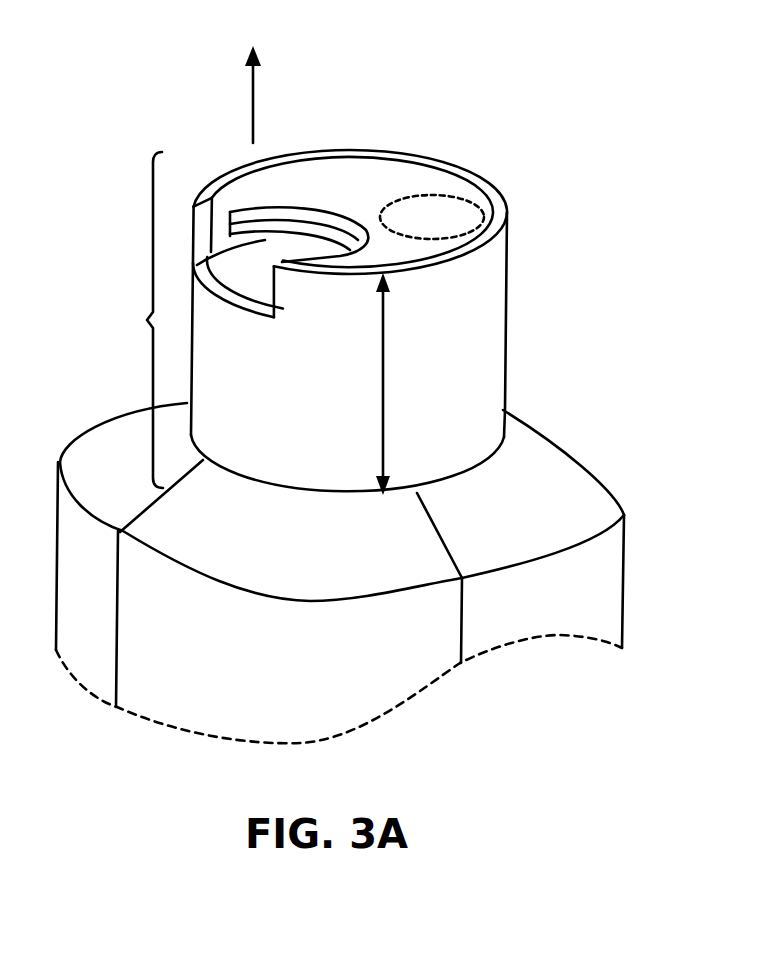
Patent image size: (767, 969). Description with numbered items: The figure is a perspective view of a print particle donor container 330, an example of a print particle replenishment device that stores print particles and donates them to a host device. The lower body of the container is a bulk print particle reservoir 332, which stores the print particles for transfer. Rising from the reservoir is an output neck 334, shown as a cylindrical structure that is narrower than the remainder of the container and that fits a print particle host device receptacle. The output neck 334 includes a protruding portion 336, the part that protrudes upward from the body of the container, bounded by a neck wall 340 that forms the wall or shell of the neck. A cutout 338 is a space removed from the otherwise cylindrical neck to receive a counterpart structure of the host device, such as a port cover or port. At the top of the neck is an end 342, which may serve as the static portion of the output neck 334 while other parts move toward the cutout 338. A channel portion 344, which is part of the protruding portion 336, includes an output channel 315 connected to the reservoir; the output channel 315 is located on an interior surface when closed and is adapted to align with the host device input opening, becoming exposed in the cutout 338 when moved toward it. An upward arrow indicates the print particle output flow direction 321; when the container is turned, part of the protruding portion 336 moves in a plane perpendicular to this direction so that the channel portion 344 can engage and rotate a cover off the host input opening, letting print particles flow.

The print particle donor container 330 is at (184, 116).
The print particle output flow direction 321 is at (254, 86).
The end of the output neck 342 is at (341, 167).
The output channel 315 is at (430, 194).
The neck wall 340 is at (508, 210).
The channel portion 344 is at (248, 228).
The output neck 334 is at (131, 320).
The cutout 338 is at (242, 312).
The protruding portion 336 is at (386, 385).
The bulk print particle reservoir 332 is at (627, 557).